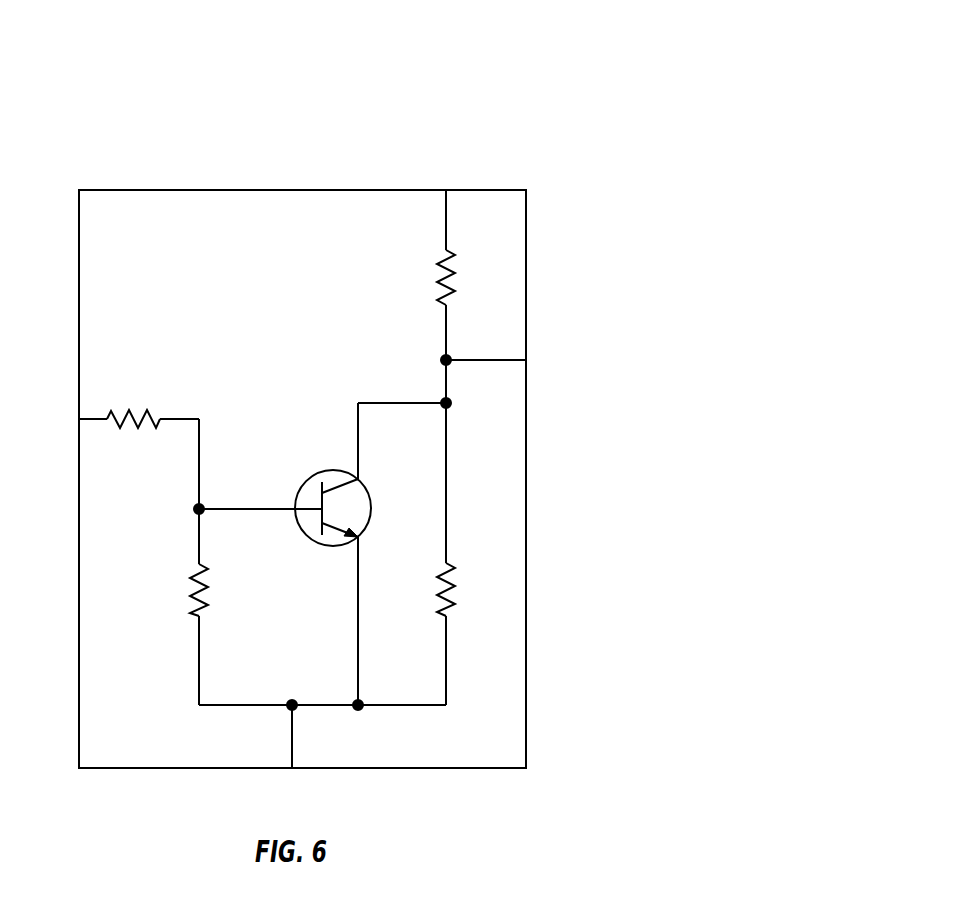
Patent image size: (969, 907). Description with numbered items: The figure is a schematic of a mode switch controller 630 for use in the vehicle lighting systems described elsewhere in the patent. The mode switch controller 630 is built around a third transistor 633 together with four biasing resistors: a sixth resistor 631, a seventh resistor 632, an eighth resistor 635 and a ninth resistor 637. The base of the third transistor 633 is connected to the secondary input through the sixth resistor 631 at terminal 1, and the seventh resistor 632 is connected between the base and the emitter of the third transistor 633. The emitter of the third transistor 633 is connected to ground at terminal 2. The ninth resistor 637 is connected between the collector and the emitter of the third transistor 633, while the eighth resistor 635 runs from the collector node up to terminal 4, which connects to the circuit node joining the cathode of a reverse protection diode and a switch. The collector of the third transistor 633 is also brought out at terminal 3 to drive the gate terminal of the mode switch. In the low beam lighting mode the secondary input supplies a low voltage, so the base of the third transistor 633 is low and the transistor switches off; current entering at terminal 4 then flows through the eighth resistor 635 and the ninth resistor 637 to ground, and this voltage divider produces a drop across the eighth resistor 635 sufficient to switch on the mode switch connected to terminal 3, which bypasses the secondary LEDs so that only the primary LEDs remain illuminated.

The mode switch controller 630 is at (542, 78).
The sixth resistor 631 is at (152, 390).
The seventh resistor 632 is at (167, 603).
The third transistor 633 is at (300, 431).
The eighth resistor 635 is at (415, 268).
The ninth resistor 637 is at (497, 603).
The terminal 1 is at (84, 420).
The terminal 2 is at (292, 753).
The terminal 3 is at (493, 360).
The terminal 4 is at (445, 204).